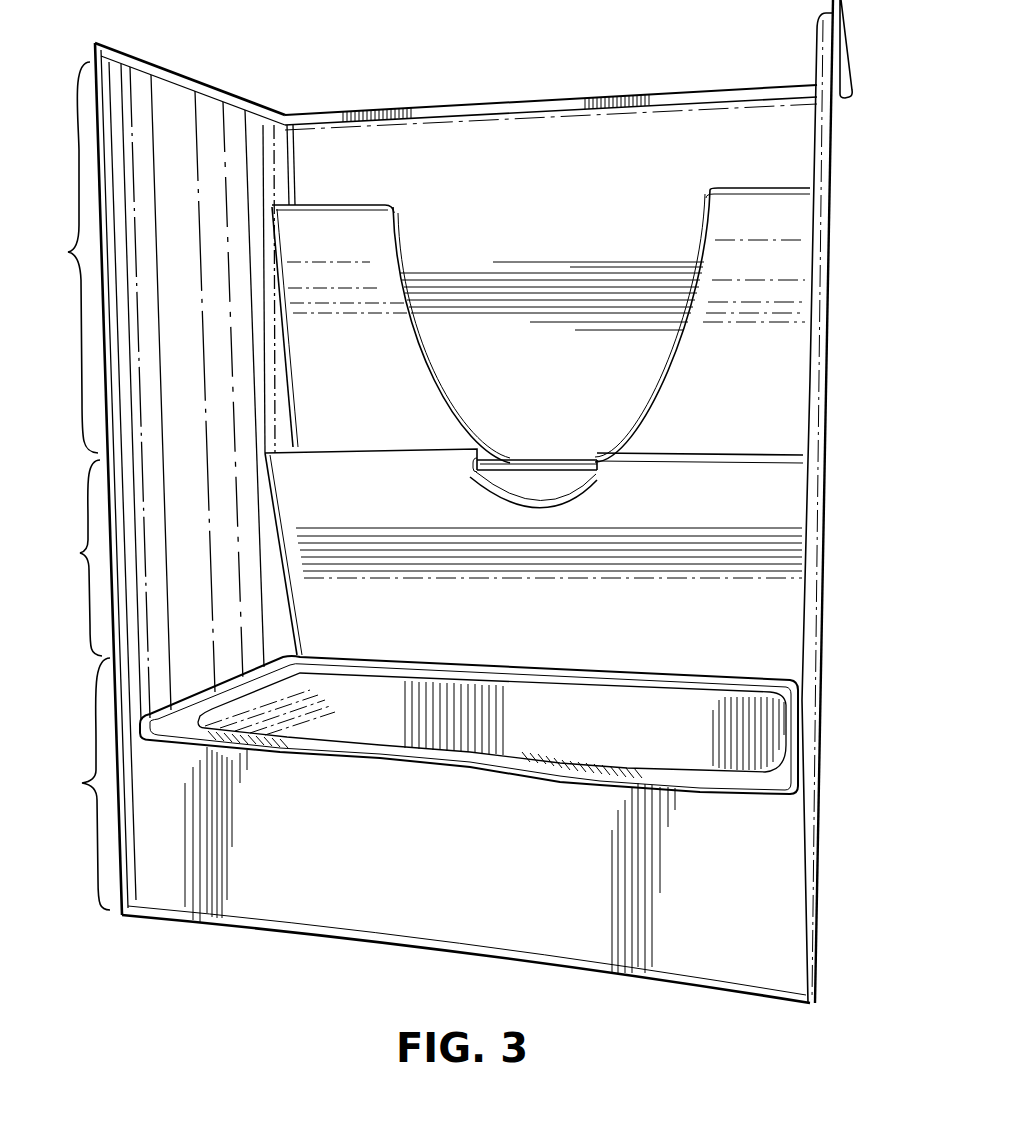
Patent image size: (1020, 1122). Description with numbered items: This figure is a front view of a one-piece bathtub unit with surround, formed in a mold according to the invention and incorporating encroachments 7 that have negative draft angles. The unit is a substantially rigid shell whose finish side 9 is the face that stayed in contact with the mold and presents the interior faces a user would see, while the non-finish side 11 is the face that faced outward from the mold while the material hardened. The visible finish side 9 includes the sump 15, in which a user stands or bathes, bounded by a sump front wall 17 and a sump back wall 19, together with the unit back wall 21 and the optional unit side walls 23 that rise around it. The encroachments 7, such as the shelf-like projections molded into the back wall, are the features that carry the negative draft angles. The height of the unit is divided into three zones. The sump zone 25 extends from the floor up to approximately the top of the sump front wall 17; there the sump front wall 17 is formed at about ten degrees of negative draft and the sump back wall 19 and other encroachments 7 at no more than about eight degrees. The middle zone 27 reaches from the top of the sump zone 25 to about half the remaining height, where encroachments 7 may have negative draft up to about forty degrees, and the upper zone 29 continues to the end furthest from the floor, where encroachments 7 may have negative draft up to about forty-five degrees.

The encroachments 7 is at (326, 233).
The finish side 9 is at (672, 128).
The non-finish side 11 is at (850, 50).
The sump 15 is at (636, 709).
The sump front wall 17 is at (560, 746).
The sump back wall 19 is at (365, 700).
The unit back wall 21 is at (505, 137).
The unit side walls 23 is at (212, 130).
The sump zone 25 is at (433, 830).
The middle zone 27 is at (428, 552).
The upper zone 29 is at (374, 257).